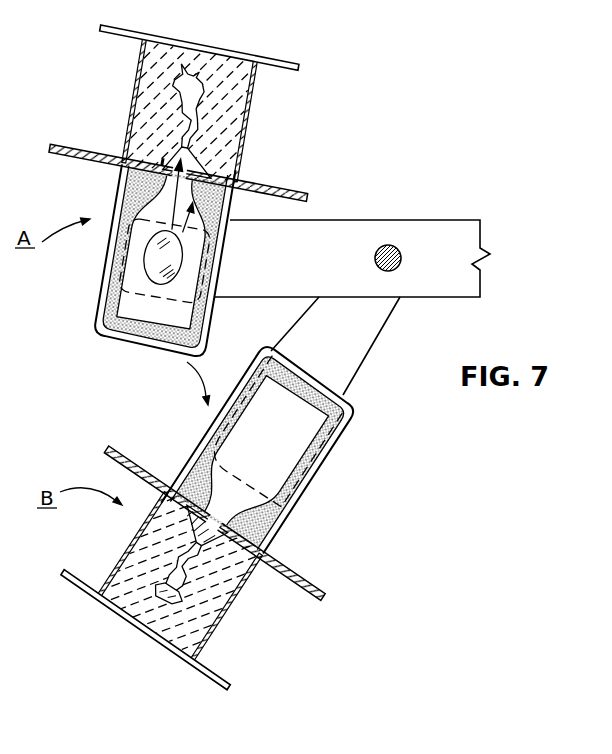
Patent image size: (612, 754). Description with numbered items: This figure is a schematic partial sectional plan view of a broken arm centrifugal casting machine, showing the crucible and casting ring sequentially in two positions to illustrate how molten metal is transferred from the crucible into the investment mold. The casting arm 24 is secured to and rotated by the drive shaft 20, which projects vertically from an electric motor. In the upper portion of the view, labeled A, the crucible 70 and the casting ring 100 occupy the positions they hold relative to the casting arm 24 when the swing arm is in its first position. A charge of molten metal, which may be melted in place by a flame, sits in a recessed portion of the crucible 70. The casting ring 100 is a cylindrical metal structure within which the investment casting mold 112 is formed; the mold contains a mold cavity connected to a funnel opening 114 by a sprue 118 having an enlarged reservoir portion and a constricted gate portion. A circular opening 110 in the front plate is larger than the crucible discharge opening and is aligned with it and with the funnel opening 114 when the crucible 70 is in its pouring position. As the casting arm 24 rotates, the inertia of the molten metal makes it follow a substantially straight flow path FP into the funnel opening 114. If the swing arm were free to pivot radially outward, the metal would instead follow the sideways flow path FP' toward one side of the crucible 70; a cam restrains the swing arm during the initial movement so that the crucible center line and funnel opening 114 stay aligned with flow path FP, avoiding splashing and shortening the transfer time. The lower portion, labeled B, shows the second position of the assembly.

The casting ring 100 is at (138, 72).
The sprue 118 is at (178, 121).
The funnel opening 114 is at (192, 162).
The flow path FP is at (128, 193).
The flow path FP' is at (224, 228).
The casting arm 24 is at (347, 227).
The drive shaft 20 is at (391, 245).
The crucible 70 is at (328, 460).
The circular opening 110 is at (270, 503).
The investment casting mold 112 is at (243, 590).